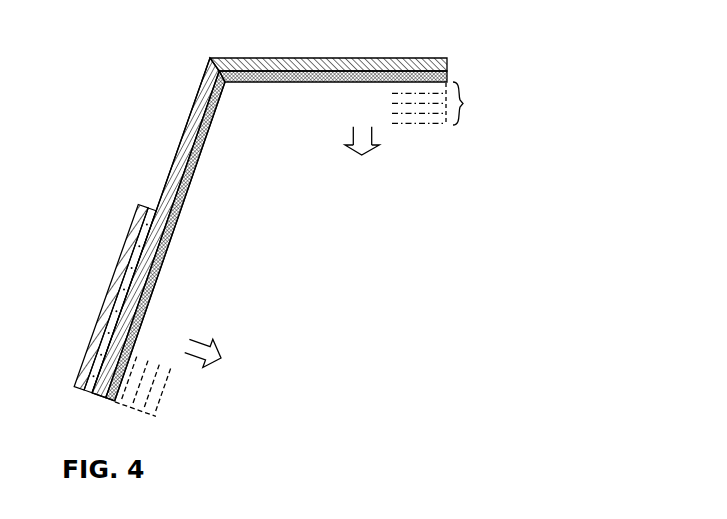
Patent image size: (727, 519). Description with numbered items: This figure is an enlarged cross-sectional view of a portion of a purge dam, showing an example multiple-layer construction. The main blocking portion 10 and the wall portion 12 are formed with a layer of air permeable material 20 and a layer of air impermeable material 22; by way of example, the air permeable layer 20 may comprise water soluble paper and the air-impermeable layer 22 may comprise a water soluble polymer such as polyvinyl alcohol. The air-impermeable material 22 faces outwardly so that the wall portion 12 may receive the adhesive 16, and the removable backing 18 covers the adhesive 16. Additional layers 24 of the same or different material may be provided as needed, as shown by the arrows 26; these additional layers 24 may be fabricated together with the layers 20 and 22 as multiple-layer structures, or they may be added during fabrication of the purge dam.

The main blocking portion 10 is at (275, 210).
The wall portion 12 is at (213, 152).
The adhesive 16 is at (148, 211).
The removable backing 18 is at (119, 258).
The layer of air permeable material 20 is at (287, 82).
The layer of air impermeable material 22 is at (285, 58).
The additional layers 24 is at (448, 103).
The arrows 26 is at (376, 114).